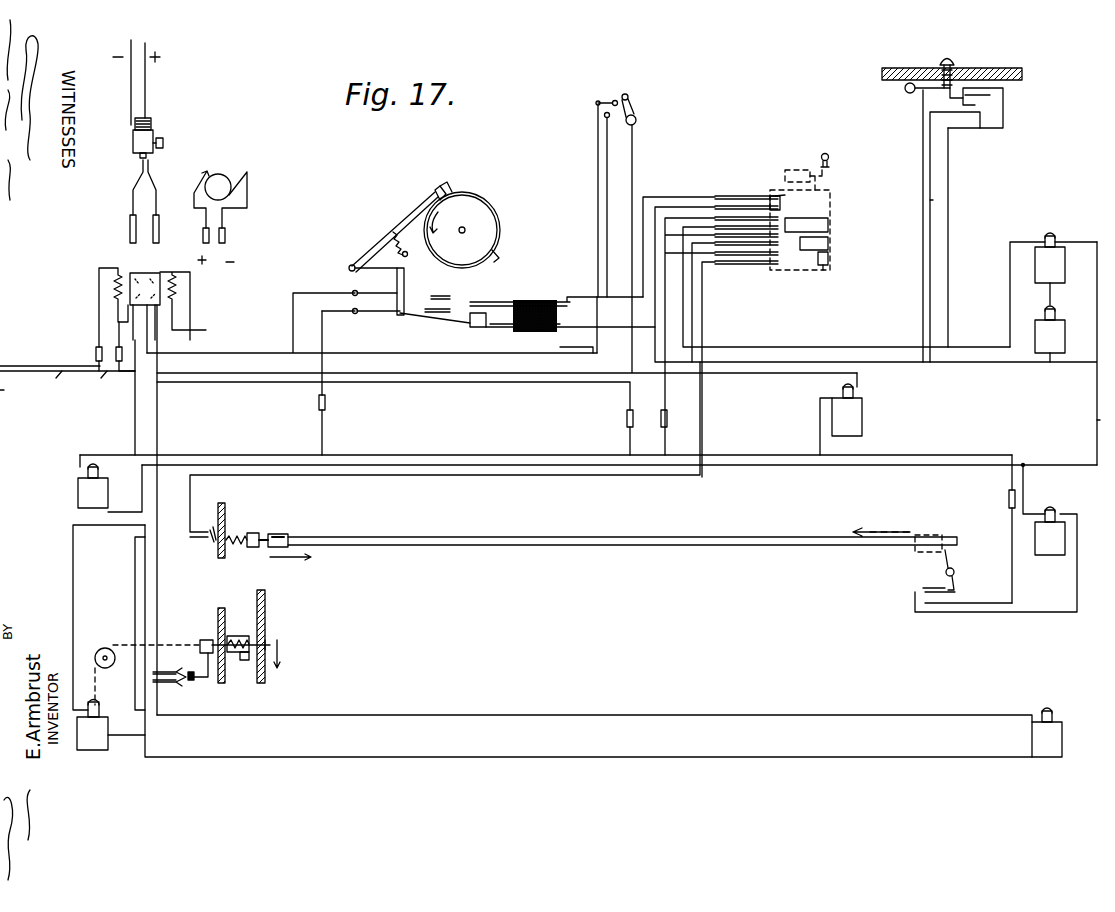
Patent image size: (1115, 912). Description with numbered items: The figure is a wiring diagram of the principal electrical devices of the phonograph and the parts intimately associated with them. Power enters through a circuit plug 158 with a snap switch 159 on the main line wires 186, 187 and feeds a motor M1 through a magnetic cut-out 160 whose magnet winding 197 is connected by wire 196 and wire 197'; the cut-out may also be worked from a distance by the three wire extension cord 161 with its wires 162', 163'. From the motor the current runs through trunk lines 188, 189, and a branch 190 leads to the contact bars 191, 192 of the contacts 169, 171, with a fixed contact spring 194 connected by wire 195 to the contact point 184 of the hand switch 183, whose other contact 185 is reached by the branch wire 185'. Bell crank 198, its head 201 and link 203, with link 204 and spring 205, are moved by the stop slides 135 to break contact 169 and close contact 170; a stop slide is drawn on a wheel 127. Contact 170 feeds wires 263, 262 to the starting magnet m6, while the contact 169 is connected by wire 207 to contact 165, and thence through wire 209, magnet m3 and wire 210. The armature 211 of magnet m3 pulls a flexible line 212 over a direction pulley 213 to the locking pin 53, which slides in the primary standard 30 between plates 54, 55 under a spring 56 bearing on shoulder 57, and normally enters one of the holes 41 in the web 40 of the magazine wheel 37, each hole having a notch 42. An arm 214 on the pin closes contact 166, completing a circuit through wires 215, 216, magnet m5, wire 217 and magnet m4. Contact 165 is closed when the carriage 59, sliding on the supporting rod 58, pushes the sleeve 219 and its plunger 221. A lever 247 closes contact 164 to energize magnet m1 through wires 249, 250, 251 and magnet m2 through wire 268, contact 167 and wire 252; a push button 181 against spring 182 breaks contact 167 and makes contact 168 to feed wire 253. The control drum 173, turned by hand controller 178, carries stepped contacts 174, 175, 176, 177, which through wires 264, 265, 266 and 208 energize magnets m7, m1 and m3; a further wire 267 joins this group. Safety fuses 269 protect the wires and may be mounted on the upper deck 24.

The circuit plug 158 is at (133, 138).
The snap switch 159 is at (163, 140).
The main line wire 186 is at (156, 190).
The main line wire 187 is at (133, 196).
The safety fuses 269 is at (136, 227).
The magnetic cut-out 160 is at (148, 279).
The magnet winding 197 is at (208, 298).
The three wire extension cord 161 is at (50, 371).
The wire 163' is at (46, 384).
The wire 162' is at (98, 385).
The locking pin 53 is at (145, 524).
The trunk line 189 is at (135, 408).
The trunk line 188 is at (158, 404).
The wire 196 is at (244, 373).
The wire 197' is at (393, 418).
The branch wire 190 is at (325, 398).
The wire 195 is at (293, 322).
The fixed contact spring 194 is at (382, 293).
The contact bar 192 is at (402, 313).
The link 203 is at (405, 270).
The bell crank 198 is at (378, 250).
The head 201 is at (434, 187).
The stop slides 135 is at (448, 192).
The spring 205 is at (411, 244).
The ratchet wheel 127 is at (471, 205).
The link 204 is at (406, 309).
The contact 171 is at (452, 296).
The contact bar 191 is at (448, 316).
The contact 169 is at (478, 327).
The contact 170 is at (487, 300).
The branch wire 185' is at (577, 313).
The contact point 184 is at (606, 93).
The contact 185 is at (586, 199).
The hand switch 183 is at (634, 103).
The lead wire 263 is at (665, 192).
The lead wire 262 is at (692, 207).
The wire 264 is at (665, 305).
The wire 265 is at (692, 315).
The wire 266 is at (702, 330).
The control drum 173 is at (828, 195).
The contact 174 is at (773, 195).
The contact 175 is at (806, 215).
The contact 176 is at (818, 243).
The contact 177 is at (823, 270).
The hand controller 178 is at (808, 170).
The upper deck 24 is at (889, 80).
The spring 182 is at (942, 60).
The push button 181 is at (955, 58).
The wire 252 is at (923, 172).
The contact 167 is at (990, 103).
The contact 168 is at (980, 120).
The wire 253 is at (932, 208).
The wire 268 is at (950, 268).
The electromagnet m7 is at (1065, 270).
The starting magnet m6 is at (1050, 362).
The conductor 267 is at (1106, 421).
The electromagnet m2 is at (862, 410).
The wire 207 is at (432, 481).
The wire 208 is at (702, 398).
The wire 249 is at (978, 450).
The wire 251 is at (947, 468).
The wire 250 is at (1010, 620).
The electromagnet m1 is at (1050, 555).
The supporting rod 58 is at (714, 543).
The lever 247 is at (953, 559).
The contact 164 is at (940, 586).
The carriage 59 is at (286, 534).
The sleeve 219 is at (256, 533).
The plunger 221 is at (235, 536).
The contact 165 is at (212, 528).
The primary standard 30 is at (219, 557).
The wire 215 is at (158, 553).
The magazine wheel 37 is at (262, 590).
The web 40 is at (272, 636).
The holes 41 is at (266, 617).
The notch 42 is at (255, 617).
The shoulder 57 is at (228, 638).
The inner plate 54 is at (242, 636).
The outer plate 55 is at (208, 640).
The spring 56 is at (244, 660).
The arm 214 is at (208, 658).
The contact 166 is at (186, 686).
The flexible line 212 is at (118, 645).
The direction pulley 213 is at (102, 648).
The armature 211 is at (96, 672).
The electromagnet m3 is at (110, 728).
The wire 210 is at (73, 600).
The wire 209 is at (135, 593).
The electromagnet m4 is at (108, 490).
The wire 216 is at (570, 711).
The wire 217 is at (630, 752).
The electromagnet m5 is at (1032, 738).
The motor M1 is at (221, 180).